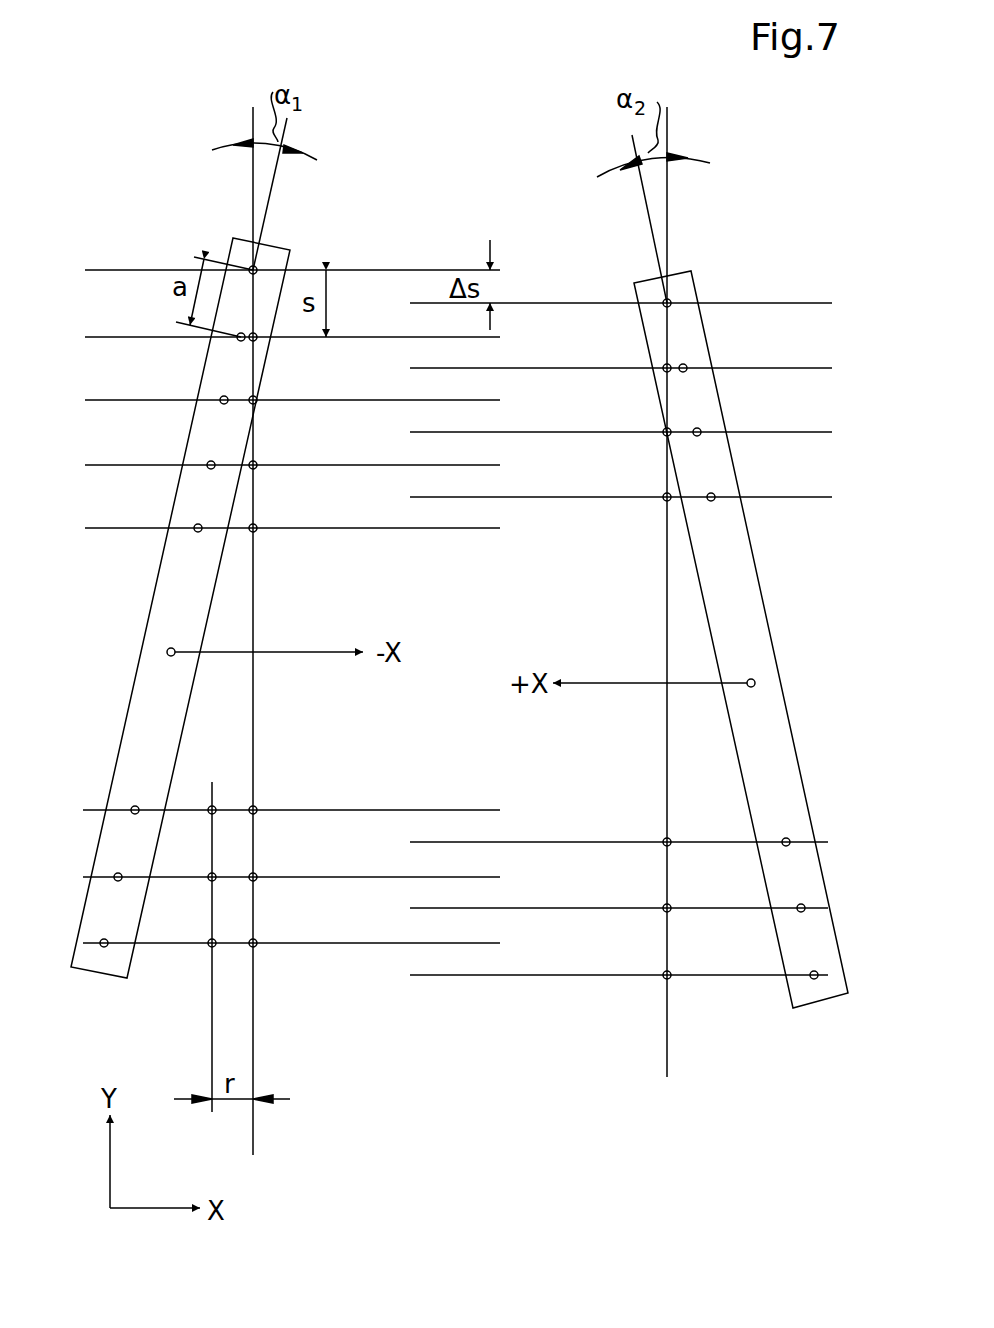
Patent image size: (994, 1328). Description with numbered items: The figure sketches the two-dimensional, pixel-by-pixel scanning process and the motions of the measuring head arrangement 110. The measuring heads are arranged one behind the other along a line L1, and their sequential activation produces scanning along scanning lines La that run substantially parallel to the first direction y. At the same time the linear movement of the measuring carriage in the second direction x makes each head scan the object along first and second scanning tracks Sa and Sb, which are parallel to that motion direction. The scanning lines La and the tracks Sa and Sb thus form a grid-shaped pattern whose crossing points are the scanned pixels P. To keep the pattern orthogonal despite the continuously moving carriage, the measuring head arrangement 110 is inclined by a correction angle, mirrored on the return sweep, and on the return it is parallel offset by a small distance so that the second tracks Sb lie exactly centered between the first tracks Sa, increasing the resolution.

The measuring head arrangement 110 is at (118, 698).
The scanning line La is at (666, 1035).
The line of measuring heads L1 is at (287, 135).
The first scanning track Sa is at (378, 810).
The second scanning track Sb is at (572, 842).
The scanned pixel P is at (253, 268).